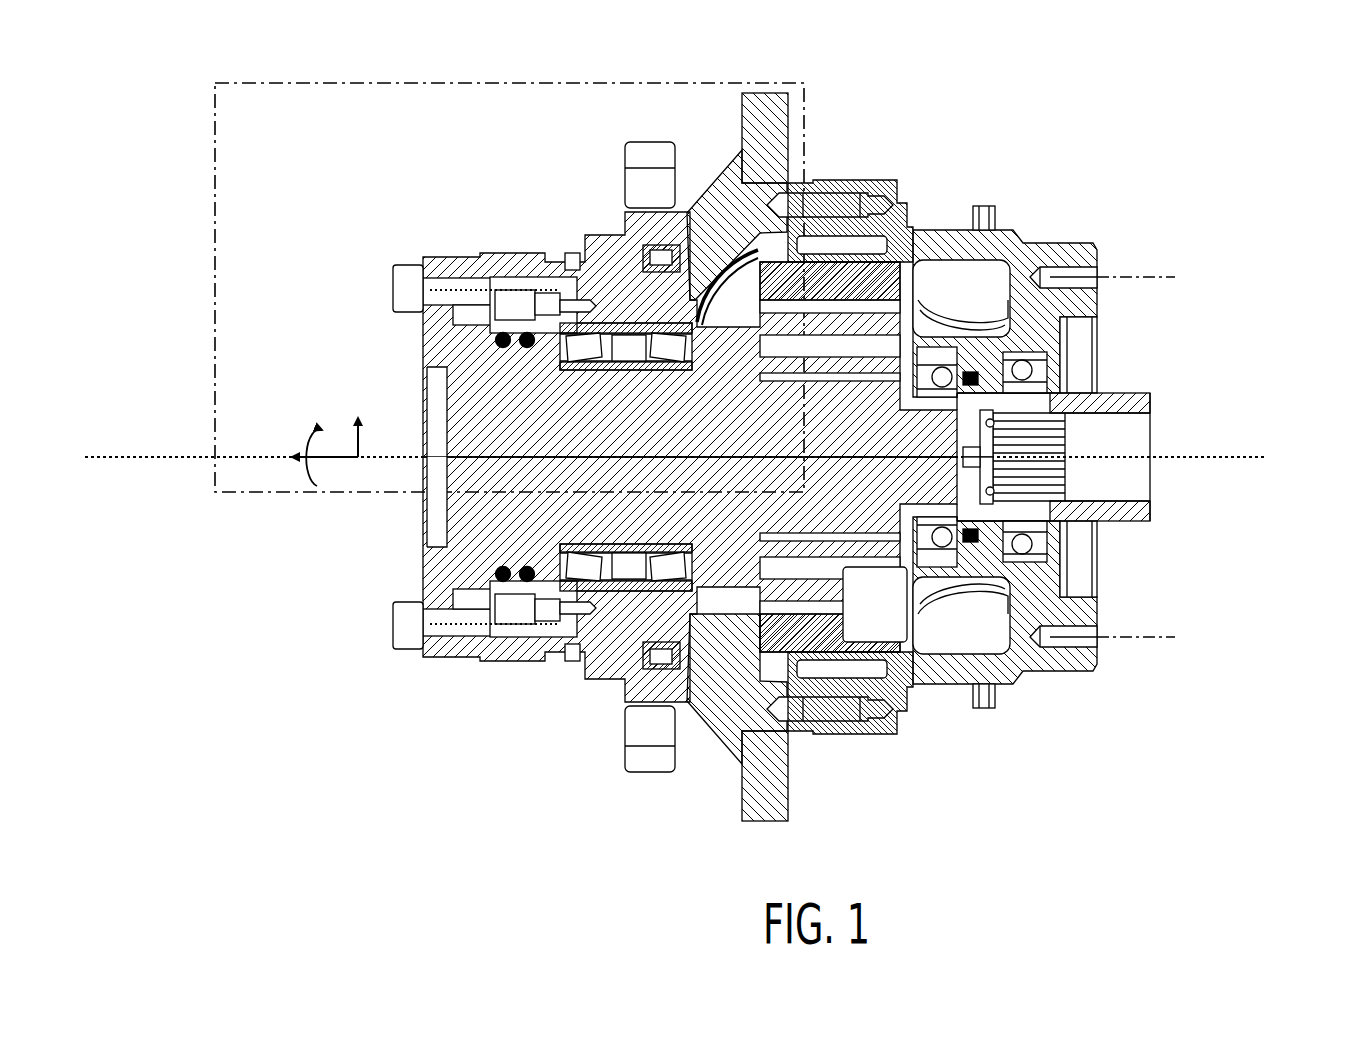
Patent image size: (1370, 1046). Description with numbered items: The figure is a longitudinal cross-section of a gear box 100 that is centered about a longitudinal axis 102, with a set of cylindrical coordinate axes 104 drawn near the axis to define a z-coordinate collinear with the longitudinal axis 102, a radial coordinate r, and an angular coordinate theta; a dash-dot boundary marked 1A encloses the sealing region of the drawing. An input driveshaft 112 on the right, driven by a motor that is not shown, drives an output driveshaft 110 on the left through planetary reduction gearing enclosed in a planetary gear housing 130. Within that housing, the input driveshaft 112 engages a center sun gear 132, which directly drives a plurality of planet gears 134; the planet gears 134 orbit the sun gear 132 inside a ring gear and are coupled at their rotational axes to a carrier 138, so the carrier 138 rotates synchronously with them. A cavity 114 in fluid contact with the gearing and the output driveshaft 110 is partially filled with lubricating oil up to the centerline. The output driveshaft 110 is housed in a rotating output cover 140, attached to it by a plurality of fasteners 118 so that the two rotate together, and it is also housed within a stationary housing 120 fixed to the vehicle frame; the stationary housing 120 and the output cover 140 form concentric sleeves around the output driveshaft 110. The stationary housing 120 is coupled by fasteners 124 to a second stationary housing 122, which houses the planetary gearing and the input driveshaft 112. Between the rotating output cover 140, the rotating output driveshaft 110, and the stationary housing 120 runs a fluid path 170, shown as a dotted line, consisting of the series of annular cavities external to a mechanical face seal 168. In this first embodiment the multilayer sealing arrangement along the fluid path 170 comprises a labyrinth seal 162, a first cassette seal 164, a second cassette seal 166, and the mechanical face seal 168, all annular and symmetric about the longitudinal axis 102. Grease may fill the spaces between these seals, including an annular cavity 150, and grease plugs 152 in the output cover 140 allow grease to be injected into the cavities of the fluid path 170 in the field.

The detail view region 1A is at (216, 102).
The gear box 100 is at (1266, 230).
The longitudinal axis 102 is at (212, 457).
The cylindrical coordinate axes 104 is at (308, 392).
The output driveshaft 110 is at (590, 437).
The input driveshaft 112 is at (1130, 405).
The cavity 114 is at (750, 320).
The fasteners 118 is at (402, 315).
The stationary housing 120 is at (778, 123).
The second stationary housing 122 is at (907, 193).
The fasteners 124 is at (893, 195).
The planetary gear housing 130 is at (887, 617).
The sun gear 132 is at (867, 433).
The planet gears 134 is at (883, 287).
The carrier 138 is at (830, 573).
The output cover 140 is at (645, 150).
The annular cavity 150 is at (553, 287).
The grease plugs 152 is at (515, 268).
The labyrinth seal 162 is at (660, 227).
The first cassette seal 164 is at (653, 262).
The second cassette seal 166 is at (495, 308).
The mechanical face seal 168 is at (487, 358).
The fluid path 170 is at (550, 253).